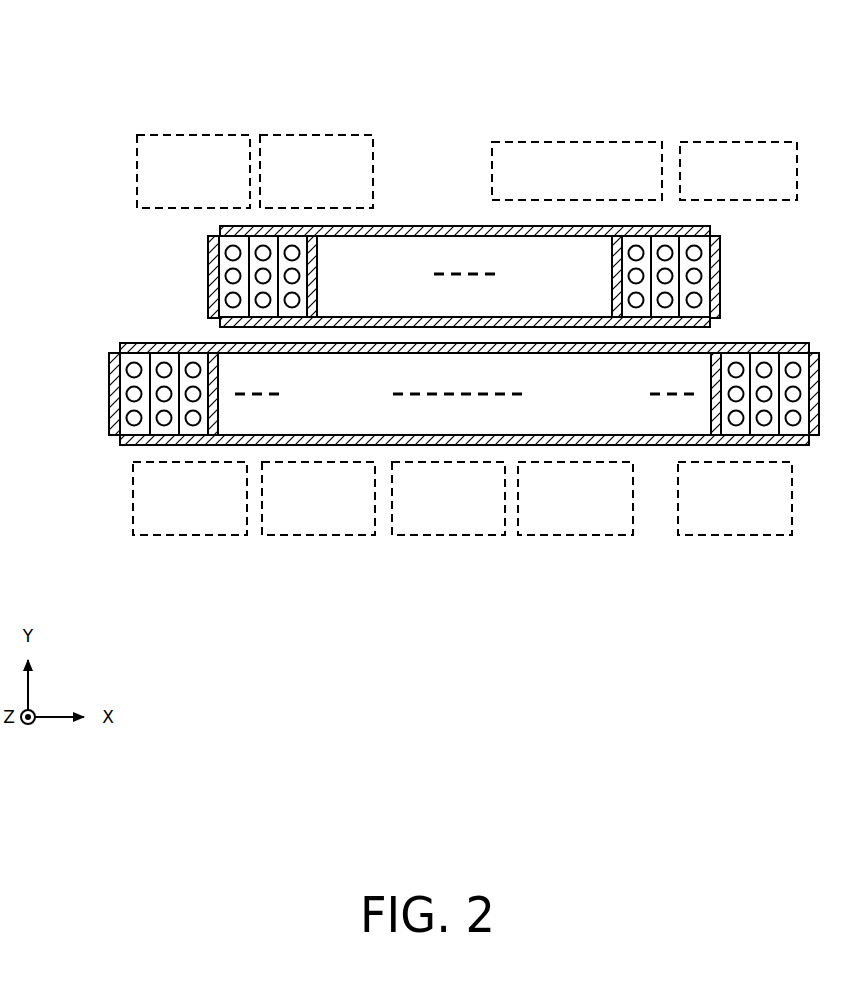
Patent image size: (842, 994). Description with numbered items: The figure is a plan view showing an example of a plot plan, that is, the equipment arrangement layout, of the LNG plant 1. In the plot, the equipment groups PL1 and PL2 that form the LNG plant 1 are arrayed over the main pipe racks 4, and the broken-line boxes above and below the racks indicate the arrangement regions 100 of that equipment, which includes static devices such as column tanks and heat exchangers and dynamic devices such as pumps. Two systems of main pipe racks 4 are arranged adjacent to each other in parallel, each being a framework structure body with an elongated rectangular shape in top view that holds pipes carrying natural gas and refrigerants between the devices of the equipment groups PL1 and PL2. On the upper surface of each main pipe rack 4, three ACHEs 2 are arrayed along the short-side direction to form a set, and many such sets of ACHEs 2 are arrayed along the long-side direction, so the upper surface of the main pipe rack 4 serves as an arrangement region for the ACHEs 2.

The LNG plant 1 is at (514, 60).
The ACHE 2 is at (226, 300).
The main pipe rack 4 is at (431, 222).
The arrangement region 100 is at (734, 133).
The equipment group PL1 is at (118, 166).
The equipment group PL2 is at (114, 505).